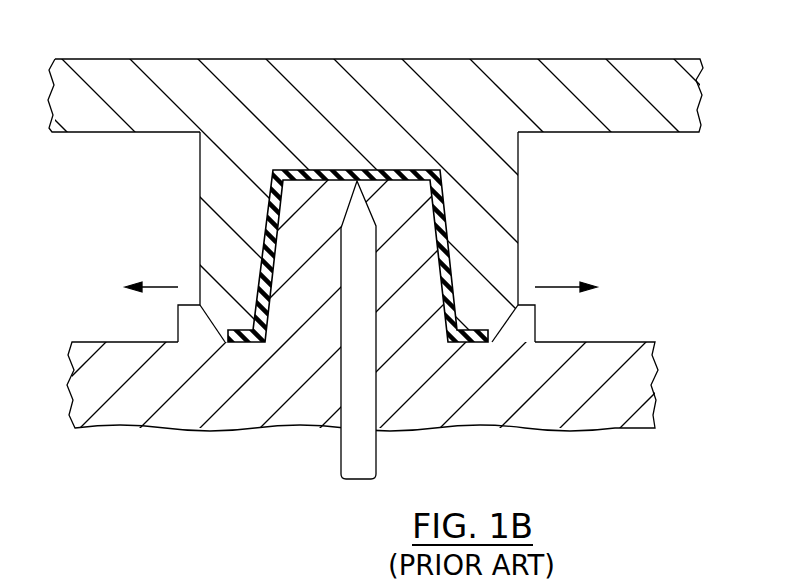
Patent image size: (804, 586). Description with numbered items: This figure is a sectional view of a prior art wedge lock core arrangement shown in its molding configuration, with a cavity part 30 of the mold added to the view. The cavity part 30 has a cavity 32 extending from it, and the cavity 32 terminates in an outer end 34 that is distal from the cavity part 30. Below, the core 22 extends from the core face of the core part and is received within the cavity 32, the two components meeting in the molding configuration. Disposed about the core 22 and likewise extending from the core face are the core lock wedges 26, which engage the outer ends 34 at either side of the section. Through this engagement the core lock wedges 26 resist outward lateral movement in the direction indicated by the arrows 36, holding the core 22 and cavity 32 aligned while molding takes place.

The cavity part 30 is at (394, 78).
The cavity 32 is at (505, 195).
The core 22 is at (293, 220).
The core lock wedges 26 is at (192, 325).
The outer end 34 is at (225, 343).
The arrows 36 is at (160, 286).